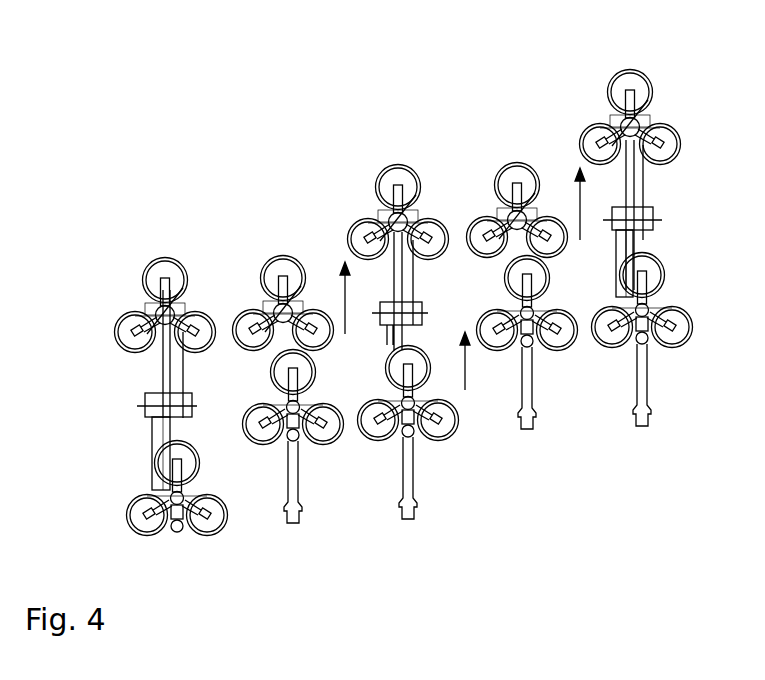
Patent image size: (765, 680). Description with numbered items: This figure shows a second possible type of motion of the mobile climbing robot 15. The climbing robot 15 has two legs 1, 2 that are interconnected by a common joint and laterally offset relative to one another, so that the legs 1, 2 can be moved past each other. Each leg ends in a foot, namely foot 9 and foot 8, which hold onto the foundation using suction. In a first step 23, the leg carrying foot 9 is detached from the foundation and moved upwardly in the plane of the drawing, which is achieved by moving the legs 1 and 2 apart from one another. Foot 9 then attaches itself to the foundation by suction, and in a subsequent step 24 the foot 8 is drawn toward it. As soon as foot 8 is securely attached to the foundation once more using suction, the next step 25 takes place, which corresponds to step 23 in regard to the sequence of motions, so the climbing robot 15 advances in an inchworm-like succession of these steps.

The leg 1 is at (130, 453).
The leg 2 is at (151, 354).
The foot 8 is at (415, 424).
The foot 9 is at (399, 183).
The mobile climbing robot 15 is at (659, 198).
The first step 23 is at (350, 309).
The subsequent step 24 is at (477, 370).
The next step 25 is at (588, 215).